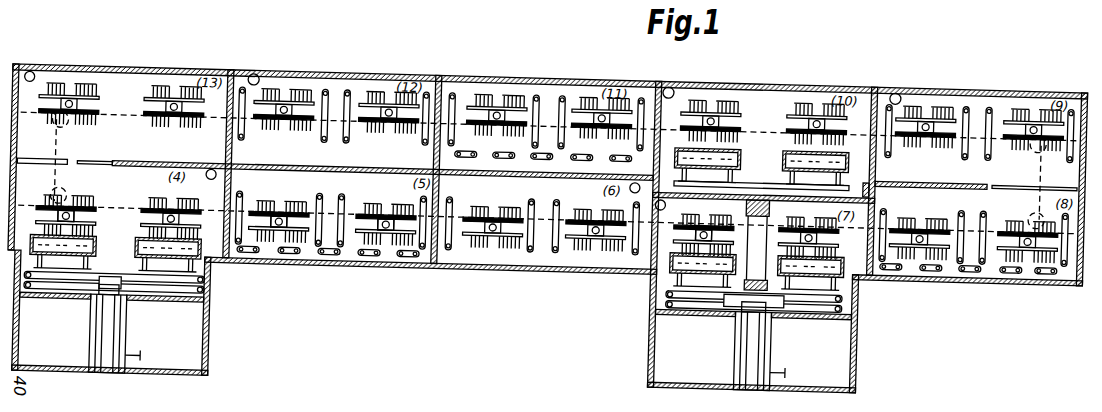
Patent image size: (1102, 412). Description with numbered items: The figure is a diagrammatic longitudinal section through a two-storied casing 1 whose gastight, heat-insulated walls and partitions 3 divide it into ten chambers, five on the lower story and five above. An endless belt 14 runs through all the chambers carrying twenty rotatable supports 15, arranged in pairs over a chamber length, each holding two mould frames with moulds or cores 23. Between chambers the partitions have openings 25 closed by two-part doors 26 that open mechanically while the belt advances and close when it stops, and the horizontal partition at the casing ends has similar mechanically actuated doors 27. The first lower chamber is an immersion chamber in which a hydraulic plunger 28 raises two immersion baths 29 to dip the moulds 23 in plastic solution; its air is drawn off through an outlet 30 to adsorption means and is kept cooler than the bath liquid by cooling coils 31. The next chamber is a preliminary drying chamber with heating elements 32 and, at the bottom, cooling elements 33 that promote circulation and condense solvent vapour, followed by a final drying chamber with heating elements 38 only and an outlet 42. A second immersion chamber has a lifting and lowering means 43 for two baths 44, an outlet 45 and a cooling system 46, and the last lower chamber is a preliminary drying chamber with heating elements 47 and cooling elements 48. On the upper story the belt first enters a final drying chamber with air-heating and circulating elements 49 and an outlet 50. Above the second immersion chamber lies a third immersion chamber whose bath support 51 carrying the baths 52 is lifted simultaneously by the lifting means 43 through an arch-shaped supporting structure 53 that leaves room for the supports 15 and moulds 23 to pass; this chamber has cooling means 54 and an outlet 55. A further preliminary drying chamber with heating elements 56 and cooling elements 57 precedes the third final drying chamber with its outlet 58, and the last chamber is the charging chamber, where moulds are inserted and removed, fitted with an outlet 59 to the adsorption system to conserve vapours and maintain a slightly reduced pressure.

The two-storied casing 1 is at (862, 64).
The partitions 3 is at (228, 157).
The endless belt 14 is at (60, 154).
The supports 15 is at (97, 106).
The moulds or cores 23 is at (286, 205).
The openings 25 is at (453, 81).
The two-part doors 26 is at (437, 66).
The mechanically actuated doors 27 is at (105, 162).
The hydraulic plunger 28 is at (120, 344).
The immersion baths 29 is at (148, 239).
The outlet 30 is at (213, 175).
The cooling coils 31 is at (212, 283).
The heating elements 32 is at (246, 187).
The cooling elements 33 is at (300, 246).
The heating elements 38 is at (456, 188).
The outlet 42 is at (636, 177).
The lifting and lowering means 43 is at (745, 315).
The immersion baths 44 is at (838, 240).
The outlet 45 is at (664, 193).
The cooling system 46 is at (848, 286).
The heating elements 47 is at (890, 192).
The cooling elements 48 is at (946, 247).
The air-heating and circulating elements 49 is at (893, 84).
The outlet 50 is at (900, 71).
The support 51 is at (761, 178).
The baths 52 is at (745, 138).
The supporting structure 53 is at (773, 200).
The cooling means 54 is at (869, 160).
The outlet 55 is at (673, 70).
The heating elements 56 is at (541, 84).
The cooling elements 57 is at (350, 80).
The outlet 58 is at (257, 68).
The outlet 59 is at (45, 59).